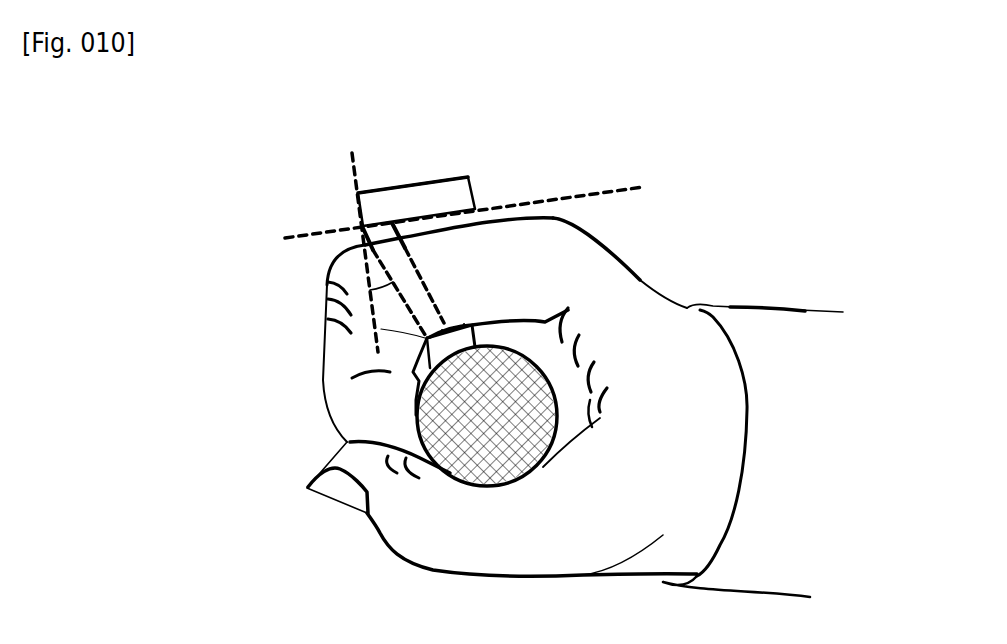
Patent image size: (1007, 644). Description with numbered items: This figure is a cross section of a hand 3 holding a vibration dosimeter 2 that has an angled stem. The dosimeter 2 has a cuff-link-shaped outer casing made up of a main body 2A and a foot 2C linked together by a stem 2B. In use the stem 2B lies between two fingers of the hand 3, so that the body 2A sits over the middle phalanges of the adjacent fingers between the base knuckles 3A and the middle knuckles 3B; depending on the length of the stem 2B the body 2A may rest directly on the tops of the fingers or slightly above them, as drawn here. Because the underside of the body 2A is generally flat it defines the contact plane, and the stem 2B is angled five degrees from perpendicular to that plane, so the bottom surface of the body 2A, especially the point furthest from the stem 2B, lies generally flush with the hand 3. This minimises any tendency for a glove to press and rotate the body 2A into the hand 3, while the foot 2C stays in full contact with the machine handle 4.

The dosimeter 2 is at (464, 232).
The main body 2A is at (455, 178).
The stem 2B is at (380, 257).
The foot 2C is at (458, 305).
The hand 3 is at (549, 406).
The base knuckles 3A is at (597, 236).
The middle knuckles 3B is at (328, 281).
The machine handle 4 is at (437, 407).